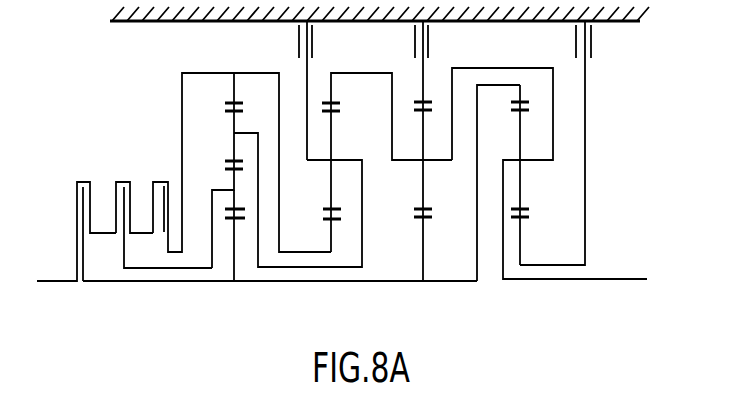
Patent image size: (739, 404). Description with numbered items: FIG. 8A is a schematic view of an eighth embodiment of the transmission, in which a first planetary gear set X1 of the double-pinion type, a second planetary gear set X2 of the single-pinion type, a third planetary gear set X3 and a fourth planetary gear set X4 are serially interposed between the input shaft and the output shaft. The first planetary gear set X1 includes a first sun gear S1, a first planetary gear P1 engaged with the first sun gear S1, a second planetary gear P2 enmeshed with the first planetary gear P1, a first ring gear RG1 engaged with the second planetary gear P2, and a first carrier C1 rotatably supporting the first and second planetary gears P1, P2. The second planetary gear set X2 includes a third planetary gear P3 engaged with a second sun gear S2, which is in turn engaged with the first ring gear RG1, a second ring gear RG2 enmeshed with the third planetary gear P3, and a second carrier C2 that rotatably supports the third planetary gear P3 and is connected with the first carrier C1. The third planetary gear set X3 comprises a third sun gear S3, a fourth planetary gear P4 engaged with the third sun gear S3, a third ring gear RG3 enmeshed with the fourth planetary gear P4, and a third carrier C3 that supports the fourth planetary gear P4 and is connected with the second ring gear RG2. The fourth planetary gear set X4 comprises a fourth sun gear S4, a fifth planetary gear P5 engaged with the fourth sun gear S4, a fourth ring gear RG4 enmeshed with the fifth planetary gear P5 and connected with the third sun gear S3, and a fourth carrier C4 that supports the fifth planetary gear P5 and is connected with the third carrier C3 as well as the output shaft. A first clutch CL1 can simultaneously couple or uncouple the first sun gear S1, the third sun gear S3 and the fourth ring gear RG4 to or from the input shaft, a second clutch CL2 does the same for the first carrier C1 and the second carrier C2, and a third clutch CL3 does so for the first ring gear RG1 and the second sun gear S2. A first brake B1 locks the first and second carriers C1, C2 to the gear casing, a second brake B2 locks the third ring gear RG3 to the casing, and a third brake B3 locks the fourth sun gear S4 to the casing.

The first clutch CL1 is at (78, 178).
The second clutch CL2 is at (123, 178).
The third clutch CL3 is at (162, 178).
The first brake B1 is at (296, 40).
The second brake B2 is at (412, 40).
The third brake B3 is at (594, 43).
The first ring gear RG1 is at (234, 87).
The second ring gear RG2 is at (331, 91).
The third ring gear RG3 is at (423, 76).
The fourth ring gear RG4 is at (520, 97).
The first planetary gear P1 is at (234, 175).
The second planetary gear P2 is at (234, 118).
The third planetary gear P3 is at (331, 131).
The fourth planetary gear P4 is at (423, 182).
The fifth planetary gear P5 is at (522, 188).
The first sun gear S1 is at (233, 229).
The second sun gear S2 is at (331, 229).
The third sun gear S3 is at (423, 237).
The fourth sun gear S4 is at (522, 237).
The first carrier C1 is at (258, 165).
The second carrier C2 is at (362, 168).
The third carrier C3 is at (440, 160).
The fourth carrier C4 is at (548, 163).
The first planetary gear set X1 is at (243, 230).
The second planetary gear set X2 is at (342, 229).
The third planetary gear set X3 is at (421, 229).
The fourth planetary gear set X4 is at (515, 228).